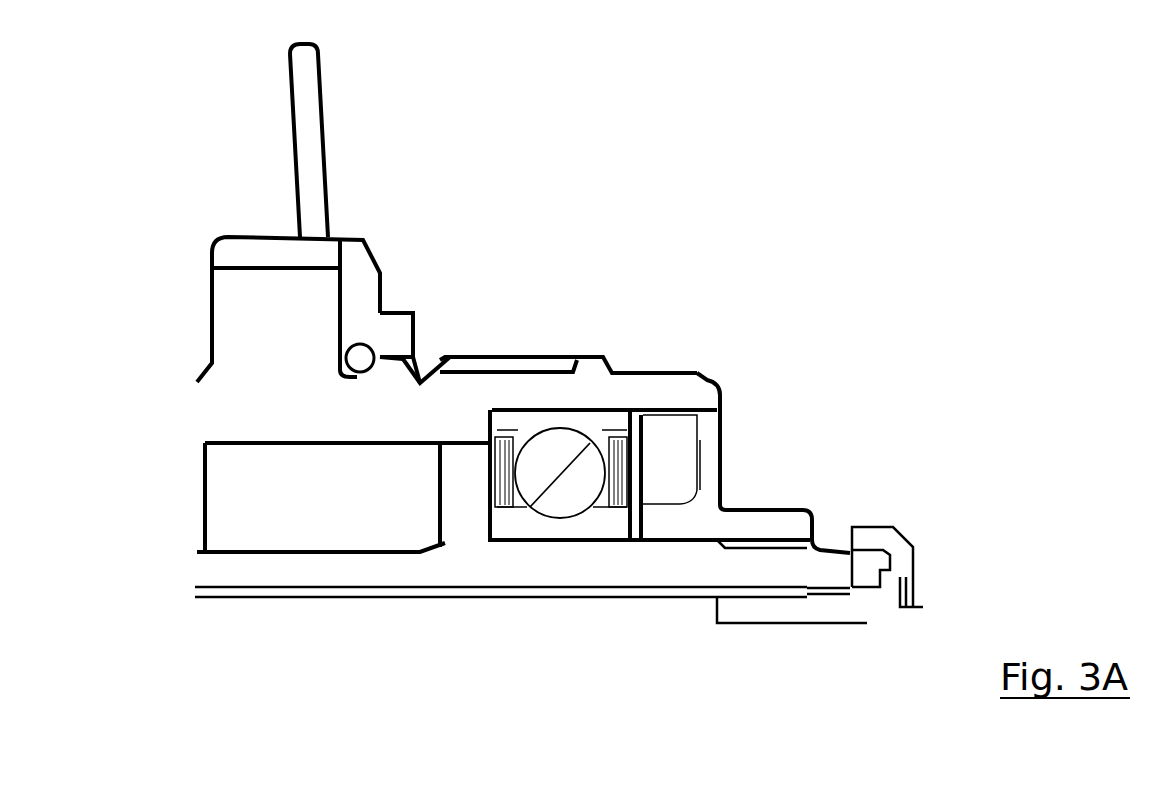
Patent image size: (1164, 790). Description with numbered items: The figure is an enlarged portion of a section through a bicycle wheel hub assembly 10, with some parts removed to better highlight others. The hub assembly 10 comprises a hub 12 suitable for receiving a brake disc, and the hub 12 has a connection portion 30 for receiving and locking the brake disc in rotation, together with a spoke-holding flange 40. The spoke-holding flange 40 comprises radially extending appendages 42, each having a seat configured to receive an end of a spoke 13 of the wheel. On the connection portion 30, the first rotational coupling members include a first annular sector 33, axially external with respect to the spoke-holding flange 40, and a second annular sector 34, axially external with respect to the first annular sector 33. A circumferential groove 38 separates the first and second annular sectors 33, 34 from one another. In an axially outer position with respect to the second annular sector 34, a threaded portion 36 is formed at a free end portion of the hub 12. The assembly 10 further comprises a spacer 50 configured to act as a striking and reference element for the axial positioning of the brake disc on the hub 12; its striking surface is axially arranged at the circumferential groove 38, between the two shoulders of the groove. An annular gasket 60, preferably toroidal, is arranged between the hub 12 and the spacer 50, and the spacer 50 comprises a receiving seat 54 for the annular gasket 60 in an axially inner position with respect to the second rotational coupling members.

The bicycle wheel hub assembly 10 is at (830, 277).
The hub 12 is at (783, 508).
The spoke 13 is at (315, 193).
The connection portion 30 is at (557, 270).
The first annular sector 33 is at (395, 362).
The second annular sector 34 is at (502, 357).
The threaded portion 36 is at (657, 372).
The circumferential groove 38 is at (420, 385).
The spoke-holding flange 40 is at (233, 363).
The appendage 42 is at (257, 287).
The spacer 50 is at (397, 330).
The receiving seat 54 is at (358, 343).
The annular gasket 60 is at (363, 372).